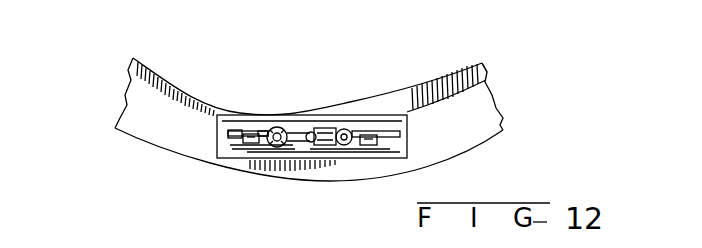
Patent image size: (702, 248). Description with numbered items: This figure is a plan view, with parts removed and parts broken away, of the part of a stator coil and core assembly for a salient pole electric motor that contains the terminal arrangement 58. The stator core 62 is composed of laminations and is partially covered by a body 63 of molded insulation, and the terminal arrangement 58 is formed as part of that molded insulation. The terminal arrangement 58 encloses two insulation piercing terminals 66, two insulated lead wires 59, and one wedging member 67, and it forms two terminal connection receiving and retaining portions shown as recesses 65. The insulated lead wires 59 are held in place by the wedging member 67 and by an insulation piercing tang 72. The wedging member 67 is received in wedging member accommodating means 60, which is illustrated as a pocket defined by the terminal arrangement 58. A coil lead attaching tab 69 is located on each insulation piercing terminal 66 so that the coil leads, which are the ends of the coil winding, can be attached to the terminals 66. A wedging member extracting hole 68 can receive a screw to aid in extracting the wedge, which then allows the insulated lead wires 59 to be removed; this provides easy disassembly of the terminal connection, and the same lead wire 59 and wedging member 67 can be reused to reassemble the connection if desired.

The terminal arrangement 58 is at (210, 151).
The insulated lead wire 59 is at (273, 147).
The wedging member accommodating means 60 is at (317, 146).
The stator core 62 is at (500, 110).
The body of molded insulation 63 is at (482, 63).
The recess 65 is at (258, 130).
The insulation piercing terminal 66 is at (236, 133).
The wedging member 67 is at (327, 126).
The wedging member extracting hole 68 is at (312, 132).
The coil lead attaching tab 69 is at (253, 145).
The insulation piercing tang 72 is at (279, 127).